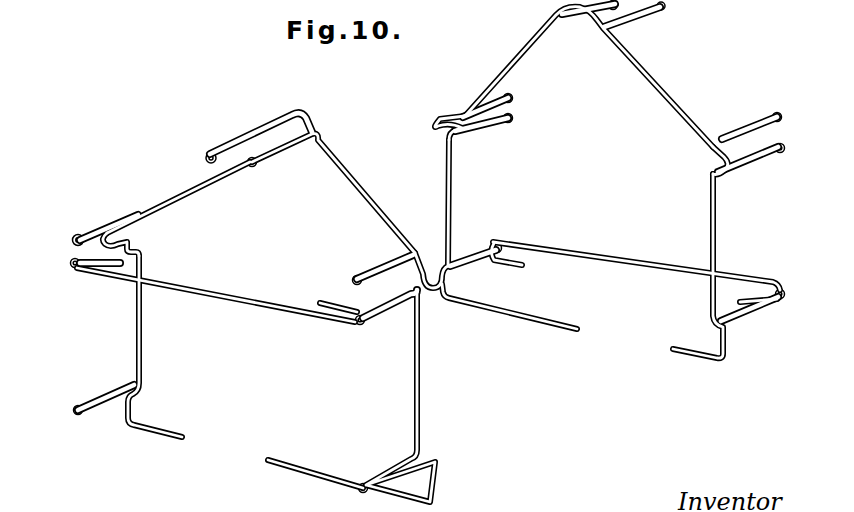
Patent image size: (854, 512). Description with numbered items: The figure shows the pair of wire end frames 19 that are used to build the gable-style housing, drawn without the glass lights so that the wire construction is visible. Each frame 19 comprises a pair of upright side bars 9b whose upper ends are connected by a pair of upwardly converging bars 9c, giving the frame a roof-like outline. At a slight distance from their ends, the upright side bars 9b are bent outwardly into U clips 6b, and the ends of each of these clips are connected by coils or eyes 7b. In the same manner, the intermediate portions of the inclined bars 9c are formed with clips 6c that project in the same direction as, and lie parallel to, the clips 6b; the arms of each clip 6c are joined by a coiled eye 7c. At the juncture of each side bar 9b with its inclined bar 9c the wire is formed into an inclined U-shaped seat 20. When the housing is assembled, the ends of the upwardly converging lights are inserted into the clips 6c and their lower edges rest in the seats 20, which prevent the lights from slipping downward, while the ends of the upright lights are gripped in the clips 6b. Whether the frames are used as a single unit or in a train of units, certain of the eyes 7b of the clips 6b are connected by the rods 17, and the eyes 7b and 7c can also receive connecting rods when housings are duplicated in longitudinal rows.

The U clip 6b is at (87, 270).
The clip 6c is at (238, 137).
The coil or eye 7b is at (70, 270).
The coiled eye 7c is at (206, 157).
The upright side bar 9b is at (136, 328).
The upwardly converging bar 9c is at (355, 205).
The rod 17 is at (212, 297).
The wire end frame 19 is at (421, 254).
The inclined U-shaped seat 20 is at (114, 220).